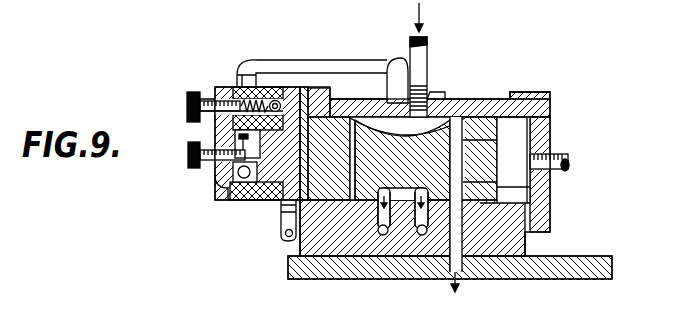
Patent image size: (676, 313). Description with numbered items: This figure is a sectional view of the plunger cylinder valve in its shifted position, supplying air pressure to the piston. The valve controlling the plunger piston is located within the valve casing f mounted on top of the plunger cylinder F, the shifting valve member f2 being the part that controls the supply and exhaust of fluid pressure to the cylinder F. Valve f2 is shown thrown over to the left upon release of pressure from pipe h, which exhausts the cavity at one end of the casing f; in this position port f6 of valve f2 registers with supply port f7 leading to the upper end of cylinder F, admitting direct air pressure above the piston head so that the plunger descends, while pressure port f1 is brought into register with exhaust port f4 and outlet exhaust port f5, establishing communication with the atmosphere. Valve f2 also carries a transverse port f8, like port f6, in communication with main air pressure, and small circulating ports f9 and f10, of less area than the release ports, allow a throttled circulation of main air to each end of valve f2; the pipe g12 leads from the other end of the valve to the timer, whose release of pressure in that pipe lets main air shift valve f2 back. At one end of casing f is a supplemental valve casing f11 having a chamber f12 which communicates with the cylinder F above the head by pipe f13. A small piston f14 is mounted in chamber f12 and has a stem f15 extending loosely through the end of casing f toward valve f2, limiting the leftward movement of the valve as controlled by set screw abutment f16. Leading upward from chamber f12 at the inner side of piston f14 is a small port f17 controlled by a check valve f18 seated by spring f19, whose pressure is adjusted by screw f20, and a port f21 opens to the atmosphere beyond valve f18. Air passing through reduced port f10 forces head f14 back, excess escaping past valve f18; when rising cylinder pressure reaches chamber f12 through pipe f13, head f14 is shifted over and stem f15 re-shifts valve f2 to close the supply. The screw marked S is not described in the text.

The plunger cylinder F is at (613, 268).
The valve casing f is at (475, 113).
The pressure port f1 is at (378, 225).
The valve f2 is at (438, 120).
The exhaust port f4 is at (405, 230).
The outlet exhaust port f5 is at (424, 232).
The port f6 is at (530, 187).
The supply port f7 is at (527, 243).
The transverse port f8 is at (328, 257).
The circulating port f9 is at (494, 98).
The circulating port f10 is at (337, 100).
The supplemental valve casing f11 is at (240, 200).
The chamber f12 is at (238, 136).
The pipe f13 is at (326, 65).
The small piston f14 is at (254, 200).
The stem f15 is at (283, 203).
The set screw abutment f16 is at (188, 157).
The small port f17 is at (297, 97).
The check valve f18 is at (252, 82).
The spring f19 is at (235, 97).
The screw f20 is at (187, 100).
The port f21 is at (277, 100).
The pipe g12 is at (568, 162).
The pipe h is at (280, 233).
The spindle S is at (428, 50).